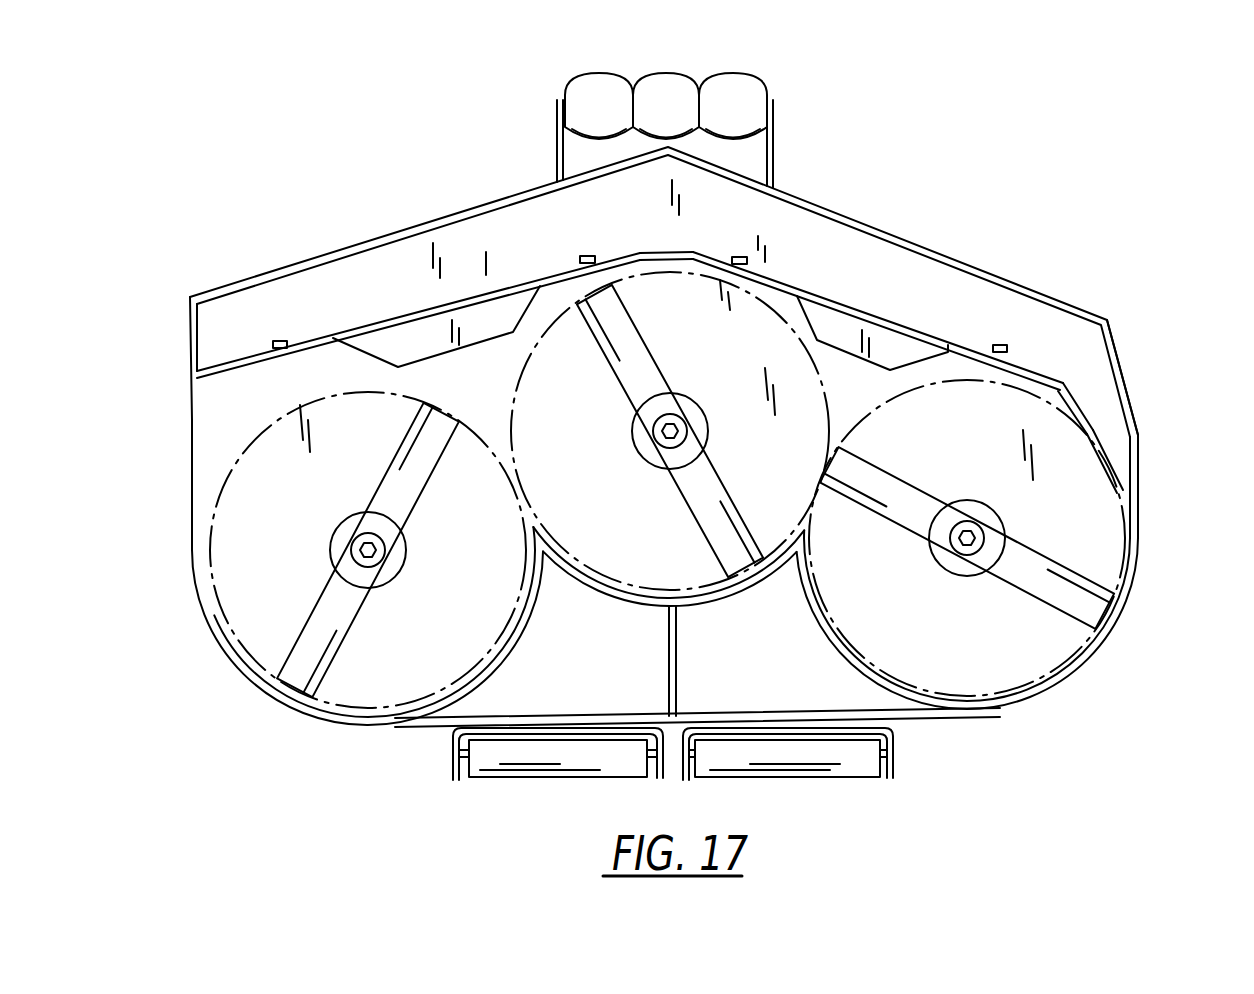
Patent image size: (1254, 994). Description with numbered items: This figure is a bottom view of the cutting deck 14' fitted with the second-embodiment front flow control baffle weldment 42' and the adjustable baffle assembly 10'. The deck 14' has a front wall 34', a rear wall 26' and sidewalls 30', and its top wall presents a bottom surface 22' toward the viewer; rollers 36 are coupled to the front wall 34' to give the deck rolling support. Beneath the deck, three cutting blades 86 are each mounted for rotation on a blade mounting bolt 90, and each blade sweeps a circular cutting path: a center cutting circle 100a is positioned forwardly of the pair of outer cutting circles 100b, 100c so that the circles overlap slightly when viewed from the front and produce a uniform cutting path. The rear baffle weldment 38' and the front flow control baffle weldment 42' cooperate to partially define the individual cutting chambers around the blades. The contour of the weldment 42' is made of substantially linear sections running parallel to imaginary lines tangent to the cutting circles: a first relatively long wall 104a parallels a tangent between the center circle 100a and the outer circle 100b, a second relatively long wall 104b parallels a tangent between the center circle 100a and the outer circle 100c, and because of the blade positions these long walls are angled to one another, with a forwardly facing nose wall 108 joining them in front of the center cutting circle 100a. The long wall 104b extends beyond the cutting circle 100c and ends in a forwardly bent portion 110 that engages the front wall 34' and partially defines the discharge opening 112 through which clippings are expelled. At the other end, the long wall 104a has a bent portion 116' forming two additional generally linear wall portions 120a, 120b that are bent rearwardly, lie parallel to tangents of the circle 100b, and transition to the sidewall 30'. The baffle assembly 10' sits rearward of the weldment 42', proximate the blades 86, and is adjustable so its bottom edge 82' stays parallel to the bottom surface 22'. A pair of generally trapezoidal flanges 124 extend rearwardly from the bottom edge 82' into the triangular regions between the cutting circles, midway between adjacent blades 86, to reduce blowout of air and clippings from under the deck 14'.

The baffle assembly 10' is at (768, 237).
The cutting deck 14' is at (688, 296).
The bottom surface 22' is at (667, 490).
The rear wall 26' is at (697, 719).
The sidewall 30' is at (1182, 488).
The front wall 34' is at (664, 291).
The rollers 36 is at (722, 85).
The rear baffle weldment 38' is at (718, 658).
The front flow control baffle weldment 42' is at (499, 246).
The bottom edge 82' is at (666, 376).
The cutting blade 86 is at (405, 462).
The blade mounting bolt 90 is at (352, 547).
The center cutting circle 100a is at (633, 590).
The outer cutting circle 100b is at (1087, 658).
The outer cutting circle 100c is at (233, 663).
The first relatively long wall 104a is at (817, 290).
The second relatively long wall 104b is at (317, 340).
The nose wall 108 is at (656, 240).
The forwardly bent portion 110 is at (190, 333).
The discharge opening 112 is at (180, 465).
The bent portion 116' is at (1165, 377).
The additional generally linear wall portion 120a is at (1077, 380).
The additional generally linear wall portion 120b is at (1125, 440).
The trapezoidal flanges 124 is at (450, 333).